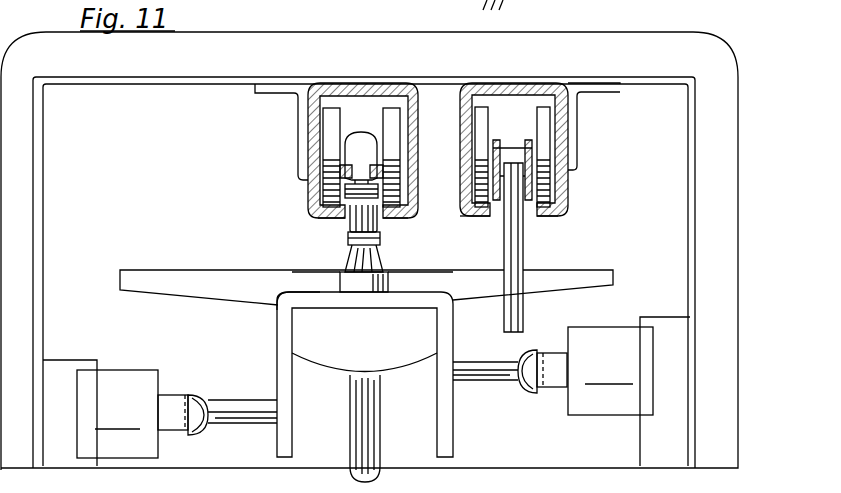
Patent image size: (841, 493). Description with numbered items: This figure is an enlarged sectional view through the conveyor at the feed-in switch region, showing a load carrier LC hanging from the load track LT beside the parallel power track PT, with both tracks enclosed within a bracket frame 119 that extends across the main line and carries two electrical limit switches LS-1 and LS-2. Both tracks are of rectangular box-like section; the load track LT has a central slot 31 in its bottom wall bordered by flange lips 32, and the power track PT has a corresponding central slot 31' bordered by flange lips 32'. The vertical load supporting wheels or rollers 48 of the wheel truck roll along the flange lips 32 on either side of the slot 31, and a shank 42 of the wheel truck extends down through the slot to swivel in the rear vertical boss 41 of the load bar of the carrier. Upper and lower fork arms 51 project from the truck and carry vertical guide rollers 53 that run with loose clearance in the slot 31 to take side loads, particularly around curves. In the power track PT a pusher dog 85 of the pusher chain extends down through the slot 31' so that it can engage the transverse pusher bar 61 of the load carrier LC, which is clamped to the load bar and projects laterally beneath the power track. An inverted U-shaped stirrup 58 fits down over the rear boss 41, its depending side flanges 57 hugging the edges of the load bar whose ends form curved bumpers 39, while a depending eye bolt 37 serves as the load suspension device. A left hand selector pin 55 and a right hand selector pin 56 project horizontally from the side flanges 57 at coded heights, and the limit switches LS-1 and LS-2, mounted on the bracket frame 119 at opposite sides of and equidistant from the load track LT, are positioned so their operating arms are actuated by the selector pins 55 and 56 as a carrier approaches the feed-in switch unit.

The frame 119 is at (364, 272).
The load track LT is at (310, 186).
The power track PT is at (570, 185).
The vertical load supporting wheels or rollers 48 is at (323, 121).
The rear vertical boss 41 is at (361, 137).
The upper and lower fork arms 51 is at (380, 190).
The vertical guide rollers 53 is at (358, 218).
The central slot 31 is at (310, 228).
The flange lips 32 is at (406, 230).
The central slot 31' is at (559, 226).
The flange lips 32' is at (469, 232).
The shank 42 is at (391, 275).
The pusher dog 85 is at (524, 253).
The pusher bar 61 is at (128, 283).
The load carrier LC is at (220, 276).
The side flanges 57 is at (455, 328).
The inverted U-shaped stirrup 58 is at (312, 292).
The curved bumpers 39 is at (328, 361).
The depending eye bolt 37 is at (360, 436).
The left hand selector pin 55 is at (204, 394).
The right hand selector pin 56 is at (496, 383).
The limit switch LS-1 is at (115, 413).
The limit switch LS-2 is at (613, 391).